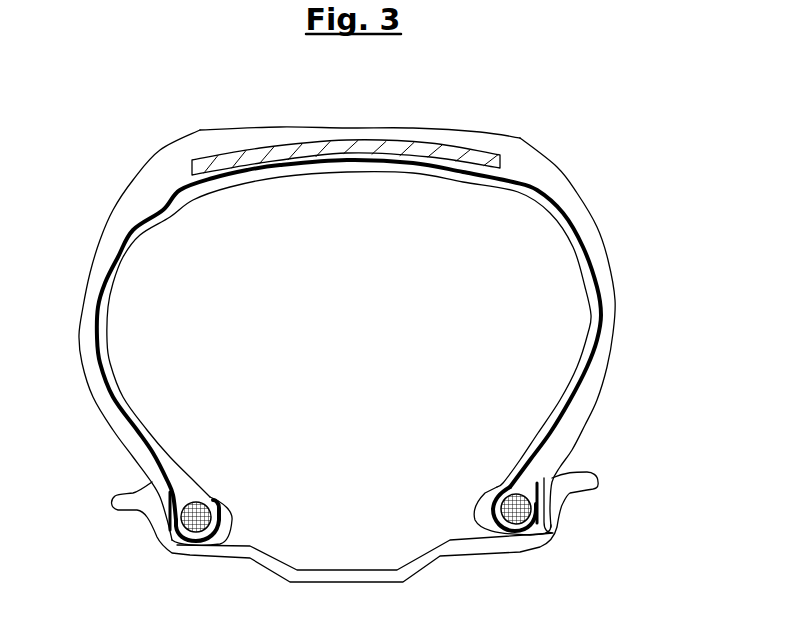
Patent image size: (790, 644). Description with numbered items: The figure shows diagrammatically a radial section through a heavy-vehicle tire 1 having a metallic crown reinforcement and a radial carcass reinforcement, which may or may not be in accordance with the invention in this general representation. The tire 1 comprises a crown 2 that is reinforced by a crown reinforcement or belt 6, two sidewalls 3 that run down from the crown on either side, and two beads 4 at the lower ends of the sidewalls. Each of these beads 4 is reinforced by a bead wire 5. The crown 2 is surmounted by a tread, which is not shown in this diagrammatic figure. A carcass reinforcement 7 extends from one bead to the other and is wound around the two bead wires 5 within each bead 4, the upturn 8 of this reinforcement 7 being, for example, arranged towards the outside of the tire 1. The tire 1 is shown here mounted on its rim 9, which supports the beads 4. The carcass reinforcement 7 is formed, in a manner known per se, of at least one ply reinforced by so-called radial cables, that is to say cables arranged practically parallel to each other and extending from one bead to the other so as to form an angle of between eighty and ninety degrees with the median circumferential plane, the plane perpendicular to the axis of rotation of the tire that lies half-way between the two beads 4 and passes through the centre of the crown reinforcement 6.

The tire 1 is at (630, 266).
The crown 2 is at (463, 138).
The sidewall 3 is at (82, 328).
The bead 4 is at (197, 473).
The bead wire 5 is at (198, 511).
The crown reinforcement 6 is at (397, 142).
The carcass reinforcement 7 is at (118, 248).
The upturn 8 is at (137, 465).
The rim 9 is at (162, 525).